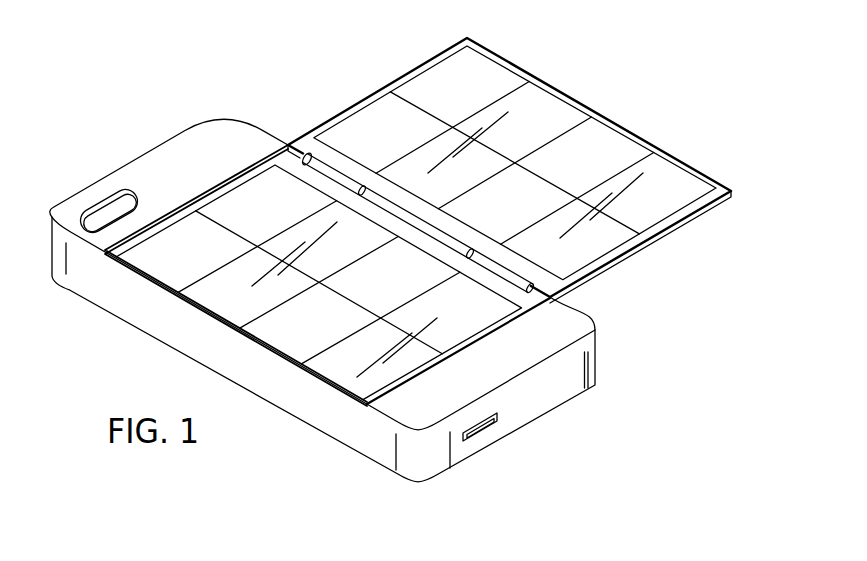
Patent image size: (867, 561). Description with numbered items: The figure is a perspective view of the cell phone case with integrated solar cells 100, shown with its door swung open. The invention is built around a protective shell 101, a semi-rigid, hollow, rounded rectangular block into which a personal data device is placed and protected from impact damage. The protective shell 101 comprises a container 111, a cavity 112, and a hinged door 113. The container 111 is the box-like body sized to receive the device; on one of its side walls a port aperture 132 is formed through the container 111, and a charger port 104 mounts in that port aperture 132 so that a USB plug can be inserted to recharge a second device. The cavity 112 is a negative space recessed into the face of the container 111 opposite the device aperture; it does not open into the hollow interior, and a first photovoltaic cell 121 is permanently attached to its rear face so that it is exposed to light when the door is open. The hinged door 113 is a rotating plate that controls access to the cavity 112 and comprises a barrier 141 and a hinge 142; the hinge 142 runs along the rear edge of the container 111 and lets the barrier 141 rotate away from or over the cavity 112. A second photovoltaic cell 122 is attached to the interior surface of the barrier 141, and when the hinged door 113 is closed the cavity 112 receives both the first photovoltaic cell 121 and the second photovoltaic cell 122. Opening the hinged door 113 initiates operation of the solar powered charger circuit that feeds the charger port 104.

The cell phone case with integrated solar cells 100 is at (136, 99).
The protective shell 101 is at (110, 181).
The container 111 is at (237, 128).
The cavity 112 is at (363, 395).
The first photovoltaic cell 121 is at (280, 303).
The hinge 142 is at (530, 283).
The barrier 141 is at (661, 222).
The hinged door 113 is at (612, 254).
The second photovoltaic cell 122 is at (538, 97).
The port aperture 132 is at (499, 413).
The charger port 104 is at (481, 429).